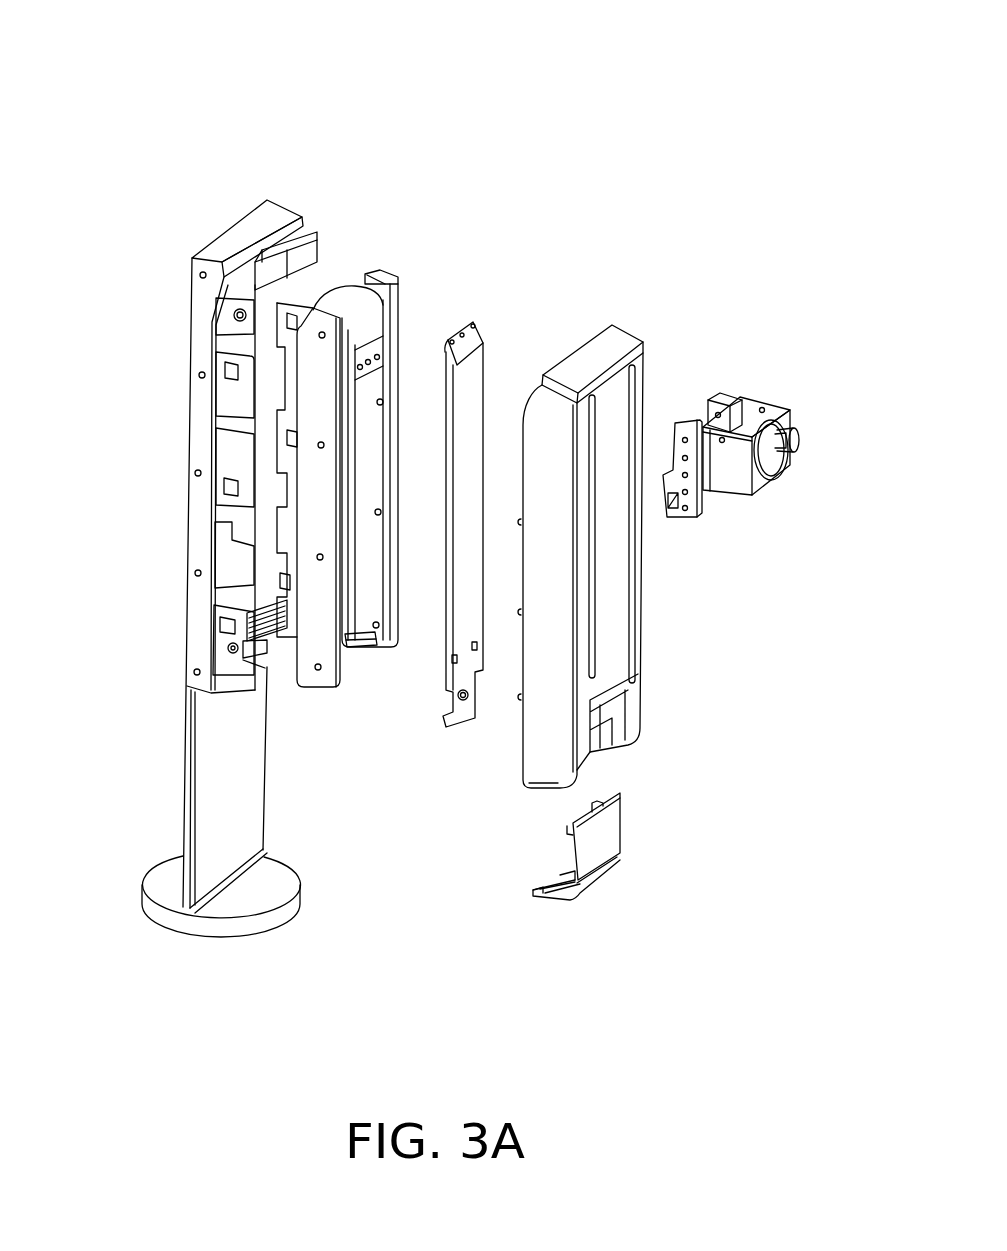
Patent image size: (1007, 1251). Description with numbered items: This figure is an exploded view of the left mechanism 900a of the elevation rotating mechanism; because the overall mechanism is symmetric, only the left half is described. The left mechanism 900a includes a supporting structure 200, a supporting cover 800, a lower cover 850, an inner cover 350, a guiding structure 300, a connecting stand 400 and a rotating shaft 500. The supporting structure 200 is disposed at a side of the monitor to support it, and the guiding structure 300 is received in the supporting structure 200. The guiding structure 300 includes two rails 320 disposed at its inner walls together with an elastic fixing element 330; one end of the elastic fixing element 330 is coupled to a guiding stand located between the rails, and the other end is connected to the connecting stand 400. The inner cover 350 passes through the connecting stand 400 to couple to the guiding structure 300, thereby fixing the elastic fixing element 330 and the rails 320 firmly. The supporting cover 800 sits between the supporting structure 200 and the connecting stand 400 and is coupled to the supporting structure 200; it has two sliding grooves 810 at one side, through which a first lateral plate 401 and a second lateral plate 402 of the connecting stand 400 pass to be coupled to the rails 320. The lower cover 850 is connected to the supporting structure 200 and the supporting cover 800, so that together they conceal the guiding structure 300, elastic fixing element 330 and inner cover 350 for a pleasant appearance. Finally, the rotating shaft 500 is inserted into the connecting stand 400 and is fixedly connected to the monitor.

The left mechanism 900a is at (86, 34).
The supporting structure 200 is at (218, 260).
The guiding structure 300 is at (383, 280).
The elastic fixing element 330 is at (342, 297).
The rail 320 is at (372, 637).
The inner cover 350 is at (470, 335).
The supporting cover 800 is at (605, 365).
The sliding groove 810 is at (636, 362).
The lower cover 850 is at (612, 828).
The connecting stand 400 is at (772, 408).
The first lateral plate 401 is at (723, 398).
The second lateral plate 402 is at (670, 483).
The rotating shaft 500 is at (797, 443).